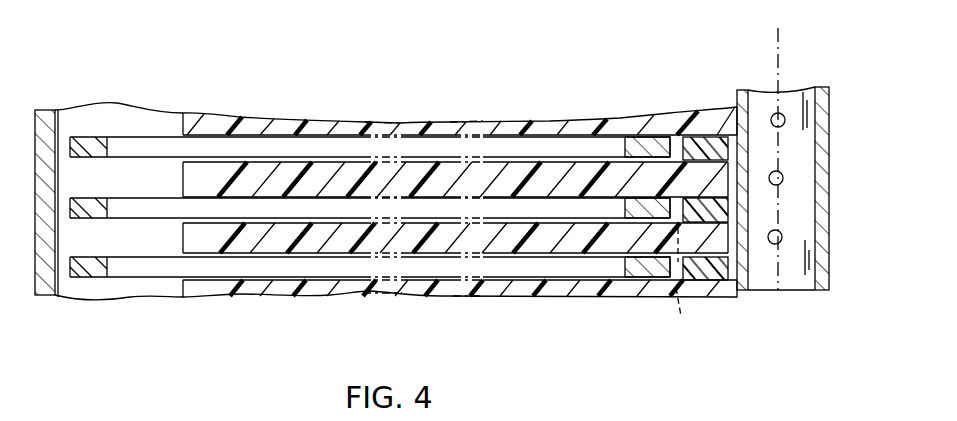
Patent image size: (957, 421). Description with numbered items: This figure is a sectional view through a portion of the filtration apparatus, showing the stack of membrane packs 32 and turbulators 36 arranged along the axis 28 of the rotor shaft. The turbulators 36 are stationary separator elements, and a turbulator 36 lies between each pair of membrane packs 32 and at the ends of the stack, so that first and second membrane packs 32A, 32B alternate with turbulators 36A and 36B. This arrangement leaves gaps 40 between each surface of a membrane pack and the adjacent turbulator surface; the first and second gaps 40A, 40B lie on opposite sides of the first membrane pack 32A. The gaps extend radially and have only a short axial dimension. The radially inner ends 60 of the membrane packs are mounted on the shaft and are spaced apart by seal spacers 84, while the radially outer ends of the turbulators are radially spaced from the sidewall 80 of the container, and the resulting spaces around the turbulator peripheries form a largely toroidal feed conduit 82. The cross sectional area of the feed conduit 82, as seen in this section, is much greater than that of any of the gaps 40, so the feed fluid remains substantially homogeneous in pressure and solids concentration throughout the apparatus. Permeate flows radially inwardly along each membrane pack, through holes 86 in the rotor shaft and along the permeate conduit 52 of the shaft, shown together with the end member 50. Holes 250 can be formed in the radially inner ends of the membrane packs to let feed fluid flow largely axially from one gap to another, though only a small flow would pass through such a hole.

The sidewall 80 is at (50, 108).
The feed conduit 82 is at (62, 147).
The turbulator 36 is at (207, 138).
The turbulator 36A is at (58, 228).
The turbulator 36B is at (183, 229).
The gap 40 is at (249, 140).
The first gap 40A is at (523, 222).
The second gap 40B is at (582, 255).
The membrane pack 32 is at (318, 162).
The first membrane pack 32A is at (157, 253).
The second membrane pack 32B is at (245, 292).
The seal spacer 84 is at (690, 135).
The radially inner end 60 is at (722, 135).
The axis 28 is at (746, 156).
The end cap 50 is at (772, 191).
The permeate conduit 52 is at (812, 270).
The hole 86 is at (745, 240).
The hole 250 is at (677, 298).